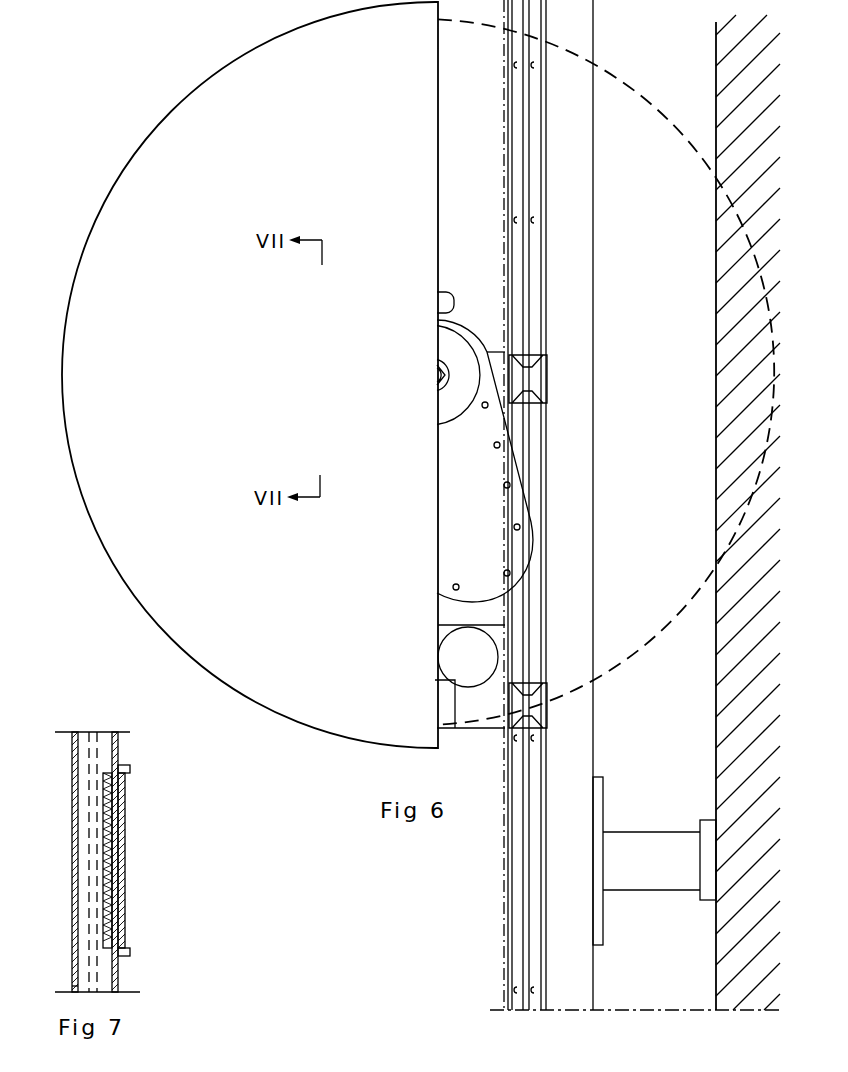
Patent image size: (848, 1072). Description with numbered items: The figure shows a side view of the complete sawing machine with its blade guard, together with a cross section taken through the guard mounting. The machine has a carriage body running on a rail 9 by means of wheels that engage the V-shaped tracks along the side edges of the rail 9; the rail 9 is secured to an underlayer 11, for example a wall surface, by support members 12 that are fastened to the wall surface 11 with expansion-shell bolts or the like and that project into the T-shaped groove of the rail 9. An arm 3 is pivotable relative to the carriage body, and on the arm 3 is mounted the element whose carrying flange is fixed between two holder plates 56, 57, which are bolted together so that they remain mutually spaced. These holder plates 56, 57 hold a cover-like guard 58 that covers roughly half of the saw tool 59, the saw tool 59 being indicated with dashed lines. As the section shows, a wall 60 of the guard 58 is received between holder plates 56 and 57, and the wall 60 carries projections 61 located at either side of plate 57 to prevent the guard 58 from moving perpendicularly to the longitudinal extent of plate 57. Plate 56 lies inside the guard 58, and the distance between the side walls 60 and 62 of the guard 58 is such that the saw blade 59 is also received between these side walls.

In FIG. 6, the arm 3 is at (472, 328).
In FIG. 6, the rail 9 is at (557, 933).
In FIG. 6, the underlayer 11 is at (716, 732).
In FIG. 6, the support member 12 is at (636, 873).
In FIG. 7, the holder plate 56 is at (108, 898).
In FIG. 7, the holder plate 57 is at (125, 852).
In FIG. 6, the guard 58 is at (215, 100).
In FIG. 7, the guard 58 is at (66, 885).
In FIG. 6, the saw tool 59 is at (648, 648).
In FIG. 7, the saw tool 59 is at (88, 836).
In FIG. 7, the wall of guard 60 is at (118, 975).
In FIG. 7, the projection 61 is at (130, 768).
In FIG. 7, the side wall of guard 62 is at (73, 978).